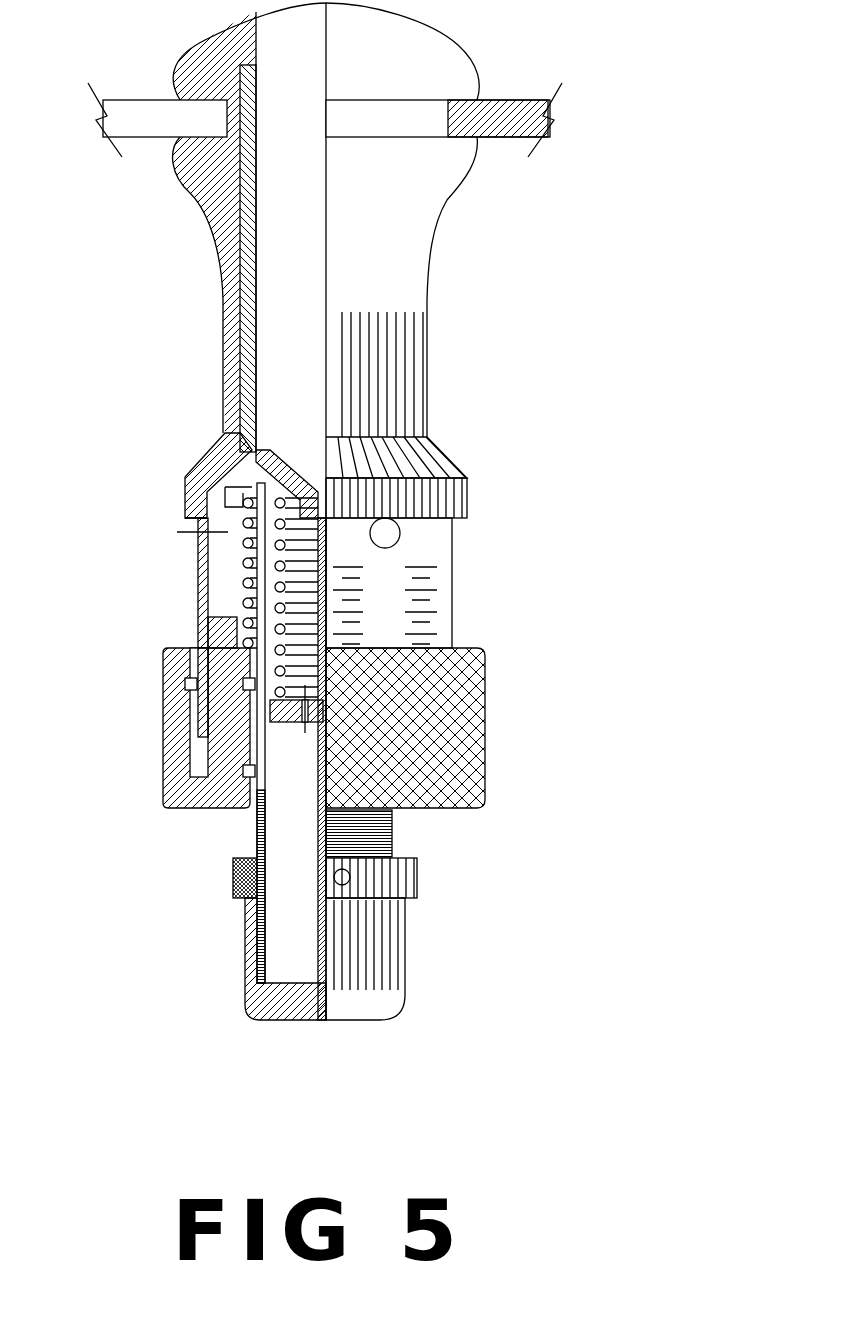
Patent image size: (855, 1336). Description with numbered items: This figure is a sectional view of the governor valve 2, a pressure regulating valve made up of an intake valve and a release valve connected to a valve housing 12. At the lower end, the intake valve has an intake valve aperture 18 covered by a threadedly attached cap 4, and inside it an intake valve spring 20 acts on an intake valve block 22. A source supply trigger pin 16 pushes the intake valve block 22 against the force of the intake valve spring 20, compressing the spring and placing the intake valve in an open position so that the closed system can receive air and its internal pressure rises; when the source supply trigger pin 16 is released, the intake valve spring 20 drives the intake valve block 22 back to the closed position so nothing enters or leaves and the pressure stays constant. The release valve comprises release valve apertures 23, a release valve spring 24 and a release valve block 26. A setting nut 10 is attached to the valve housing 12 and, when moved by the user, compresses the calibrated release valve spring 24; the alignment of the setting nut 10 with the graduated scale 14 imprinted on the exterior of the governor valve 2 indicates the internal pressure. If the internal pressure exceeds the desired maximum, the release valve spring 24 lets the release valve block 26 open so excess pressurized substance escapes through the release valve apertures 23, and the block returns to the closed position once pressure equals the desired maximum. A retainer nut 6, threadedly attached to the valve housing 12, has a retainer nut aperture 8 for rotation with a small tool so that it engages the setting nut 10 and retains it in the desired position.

The governor valve 2 is at (642, 185).
The cap 4 is at (405, 965).
The retainer nut 6 is at (415, 882).
The retainer nut aperture 8 is at (342, 877).
The setting nut 10 is at (485, 713).
The valve housing 12 is at (423, 384).
The graduated scale 14 is at (460, 520).
The source supply trigger pin 16 is at (320, 872).
The intake valve aperture 18 is at (287, 923).
The intake valve spring 20 is at (280, 608).
The intake valve block 22 is at (312, 460).
The release valve apertures 23 is at (385, 533).
The release valve spring 24 is at (247, 563).
The release valve block 26 is at (260, 477).